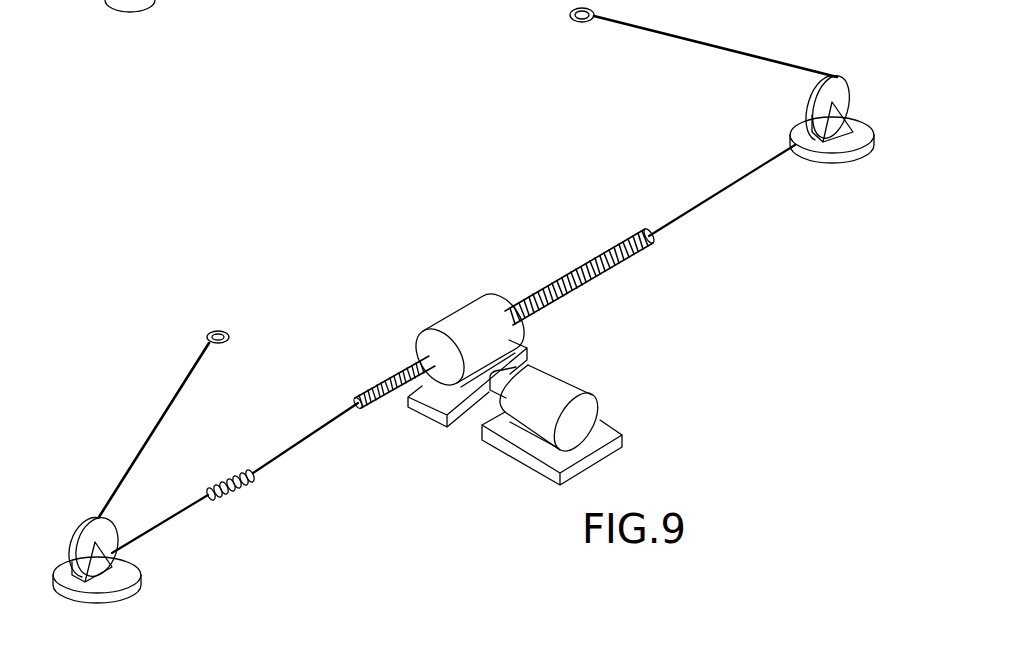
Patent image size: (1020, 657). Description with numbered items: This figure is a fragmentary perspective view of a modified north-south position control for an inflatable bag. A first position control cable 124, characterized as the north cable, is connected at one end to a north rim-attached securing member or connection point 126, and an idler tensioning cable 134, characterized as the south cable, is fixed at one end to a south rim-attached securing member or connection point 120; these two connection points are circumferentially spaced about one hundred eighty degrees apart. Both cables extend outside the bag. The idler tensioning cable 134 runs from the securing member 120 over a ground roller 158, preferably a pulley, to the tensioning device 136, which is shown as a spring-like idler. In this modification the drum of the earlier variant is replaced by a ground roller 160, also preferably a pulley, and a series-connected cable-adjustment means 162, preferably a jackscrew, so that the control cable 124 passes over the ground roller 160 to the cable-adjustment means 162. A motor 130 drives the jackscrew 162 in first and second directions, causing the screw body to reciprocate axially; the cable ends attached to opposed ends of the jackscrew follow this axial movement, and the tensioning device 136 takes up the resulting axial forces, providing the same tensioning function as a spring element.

The south rim-attached securing member 120 is at (210, 332).
The first position control cable 124 is at (675, 33).
The north rim-attached securing member 126 is at (580, 22).
The motor 130 is at (583, 412).
The idler tensioning cable 134 is at (172, 512).
The tensioning device 136 is at (245, 487).
The ground roller 158 is at (138, 587).
The ground roller 160 is at (811, 117).
The cable-adjustment means 162 is at (513, 338).